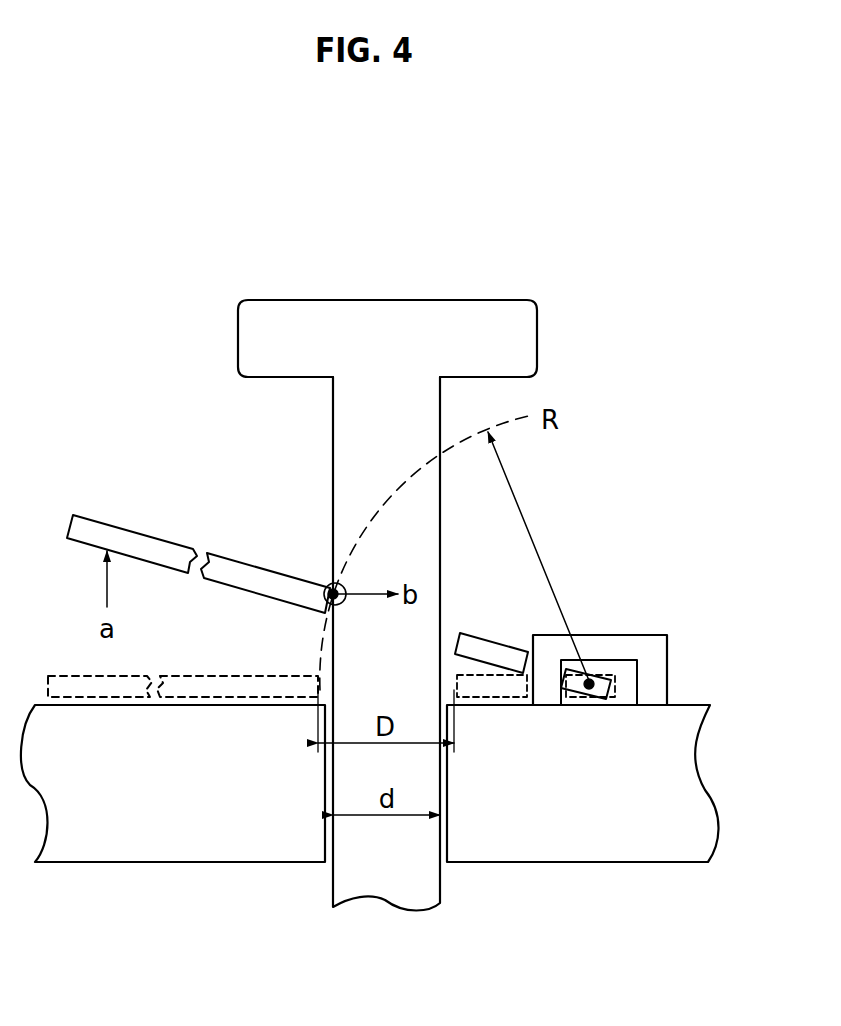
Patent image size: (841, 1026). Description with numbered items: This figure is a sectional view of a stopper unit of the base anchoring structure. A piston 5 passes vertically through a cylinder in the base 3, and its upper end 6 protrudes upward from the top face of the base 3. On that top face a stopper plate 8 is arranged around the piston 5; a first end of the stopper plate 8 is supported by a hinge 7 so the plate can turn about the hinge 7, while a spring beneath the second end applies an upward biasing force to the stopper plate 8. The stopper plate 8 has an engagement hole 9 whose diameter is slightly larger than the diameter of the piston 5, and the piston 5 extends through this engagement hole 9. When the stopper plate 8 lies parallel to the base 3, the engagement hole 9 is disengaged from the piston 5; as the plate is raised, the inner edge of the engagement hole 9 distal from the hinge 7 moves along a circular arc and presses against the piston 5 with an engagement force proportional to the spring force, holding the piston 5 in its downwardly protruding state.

The base 3 is at (115, 863).
The piston 5 is at (333, 460).
The upper end 6 is at (388, 300).
The hinge 7 is at (625, 635).
The stopper plate 8 is at (117, 527).
The engagement hole 9 is at (333, 582).